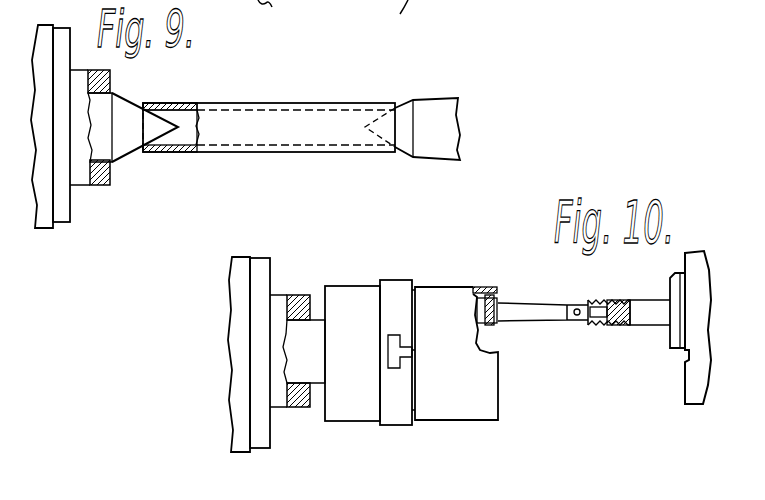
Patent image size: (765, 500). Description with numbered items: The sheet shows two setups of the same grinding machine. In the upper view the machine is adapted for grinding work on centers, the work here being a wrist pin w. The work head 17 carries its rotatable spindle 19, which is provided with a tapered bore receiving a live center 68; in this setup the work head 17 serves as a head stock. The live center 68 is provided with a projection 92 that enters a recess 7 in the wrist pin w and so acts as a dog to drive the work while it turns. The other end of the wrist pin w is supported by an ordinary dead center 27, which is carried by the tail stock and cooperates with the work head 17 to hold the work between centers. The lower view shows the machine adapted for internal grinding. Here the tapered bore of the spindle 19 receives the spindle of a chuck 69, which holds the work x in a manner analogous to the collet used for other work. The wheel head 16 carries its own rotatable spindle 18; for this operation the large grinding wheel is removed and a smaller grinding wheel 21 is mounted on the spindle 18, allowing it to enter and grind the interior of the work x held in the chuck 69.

In FIG. 9, the work head 17 is at (43, 213).
In FIG. 9, the spindle 19 is at (97, 183).
In FIG. 10, the spindle 19 is at (282, 408).
In FIG. 9, the live center 68 is at (130, 140).
In FIG. 9, the wrist pin W is at (272, 130).
In FIG. 9, the dead center 27 is at (437, 118).
In FIG. 9, the projection 92 is at (155, 107).
In FIG. 9, the recess 7 is at (152, 110).
In FIG. 10, the wheel head 16 is at (695, 297).
In FIG. 10, the spindle 18 is at (660, 318).
In FIG. 10, the chuck 69 is at (360, 405).
In FIG. 10, the work X is at (470, 373).
In FIG. 10, the smaller grinding wheel 21 is at (487, 287).